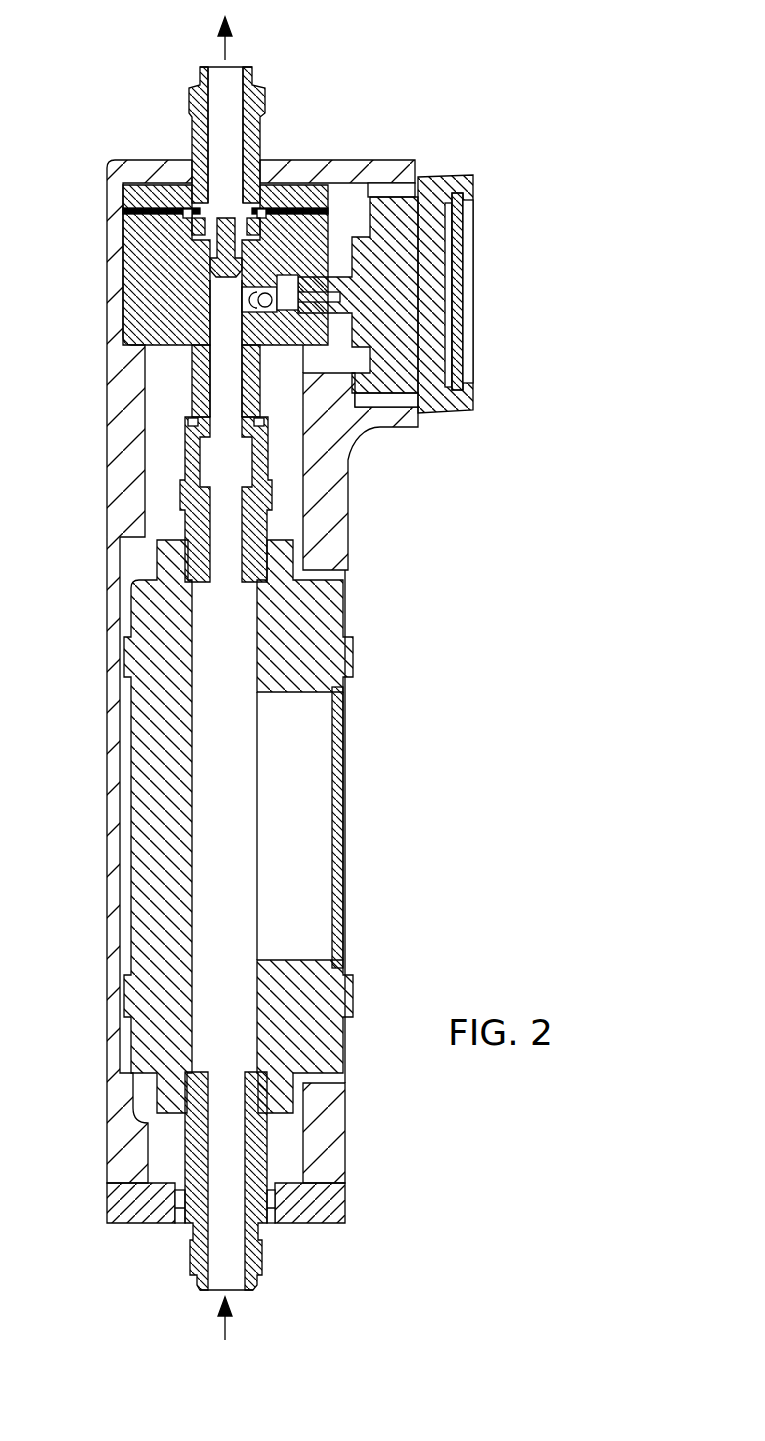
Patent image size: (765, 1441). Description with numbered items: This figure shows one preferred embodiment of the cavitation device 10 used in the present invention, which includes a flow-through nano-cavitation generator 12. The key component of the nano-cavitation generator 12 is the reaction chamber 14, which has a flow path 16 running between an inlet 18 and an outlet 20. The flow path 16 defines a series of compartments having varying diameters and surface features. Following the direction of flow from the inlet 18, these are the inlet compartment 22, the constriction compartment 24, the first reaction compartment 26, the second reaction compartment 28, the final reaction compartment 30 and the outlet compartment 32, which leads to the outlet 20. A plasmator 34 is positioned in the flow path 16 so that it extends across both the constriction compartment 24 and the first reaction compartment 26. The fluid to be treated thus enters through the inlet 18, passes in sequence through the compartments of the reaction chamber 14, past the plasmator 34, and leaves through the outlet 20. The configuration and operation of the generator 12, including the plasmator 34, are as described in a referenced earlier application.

The cavitation device 10 is at (588, 391).
The nano-cavitation generator 12 is at (107, 484).
The reaction chamber 14 is at (133, 312).
The flow path 16 is at (222, 348).
The inlet 18 is at (212, 1293).
The outlet 20 is at (217, 67).
The inlet compartment 22 is at (220, 468).
The constriction compartment 24 is at (222, 313).
The first reaction compartment 26 is at (212, 242).
The second reaction compartment 28 is at (197, 193).
The final reaction compartment 30 is at (227, 195).
The outlet compartment 32 is at (215, 92).
The plasmator 34 is at (250, 200).